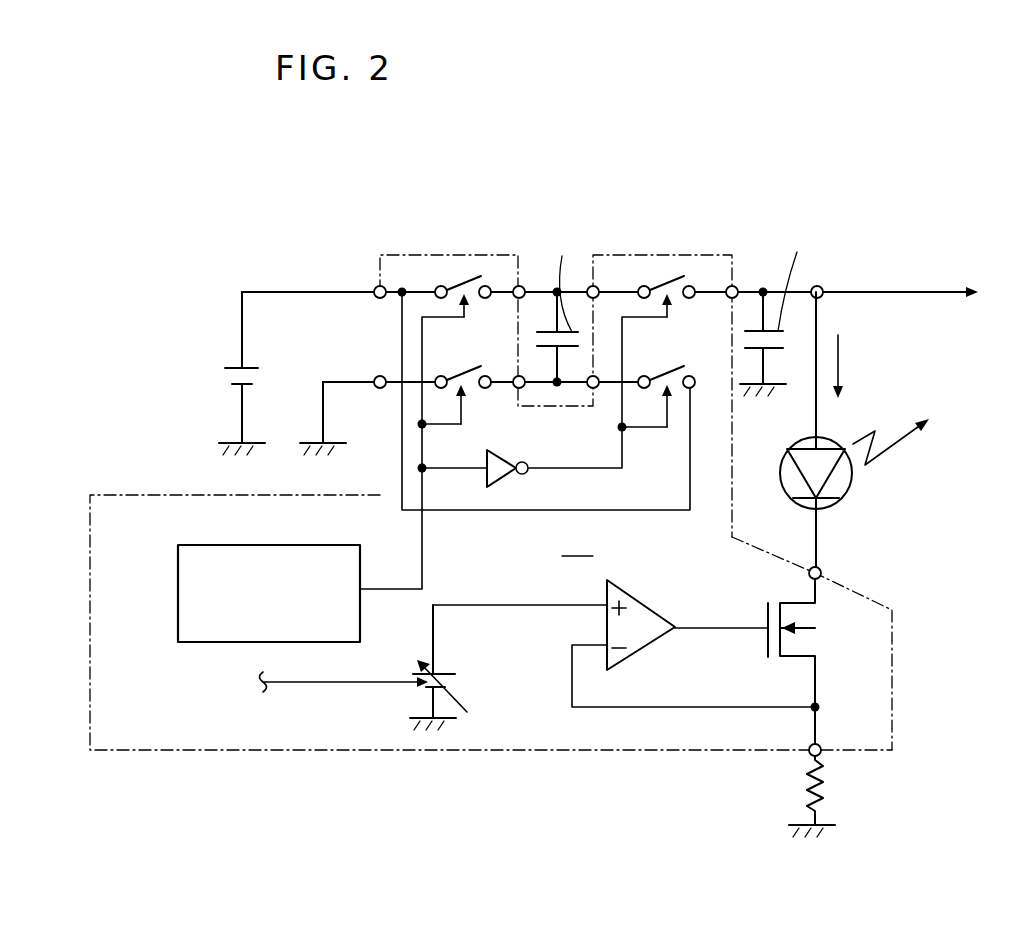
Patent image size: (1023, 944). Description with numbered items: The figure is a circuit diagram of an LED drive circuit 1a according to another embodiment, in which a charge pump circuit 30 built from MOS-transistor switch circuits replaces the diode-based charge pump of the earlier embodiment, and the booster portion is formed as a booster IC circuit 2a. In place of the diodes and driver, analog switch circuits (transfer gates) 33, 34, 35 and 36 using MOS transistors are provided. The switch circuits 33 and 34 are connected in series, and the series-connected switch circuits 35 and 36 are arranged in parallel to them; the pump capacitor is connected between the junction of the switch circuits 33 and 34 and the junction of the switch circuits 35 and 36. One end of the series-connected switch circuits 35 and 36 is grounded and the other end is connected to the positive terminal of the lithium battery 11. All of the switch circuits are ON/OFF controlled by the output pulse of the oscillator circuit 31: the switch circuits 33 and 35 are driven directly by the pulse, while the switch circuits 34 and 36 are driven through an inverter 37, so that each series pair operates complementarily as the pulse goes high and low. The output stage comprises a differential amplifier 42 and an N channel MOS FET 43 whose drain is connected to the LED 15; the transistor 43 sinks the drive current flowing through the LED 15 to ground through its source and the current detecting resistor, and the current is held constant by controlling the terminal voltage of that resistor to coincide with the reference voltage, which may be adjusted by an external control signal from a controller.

The LED drive circuit 1a is at (583, 180).
The lithium battery 11 is at (229, 362).
The LED 15 is at (849, 496).
The booster IC circuit 2a is at (898, 612).
The charge pump circuit 30 is at (585, 442).
The oscillator circuit 31 is at (298, 545).
The switch circuit 33 is at (471, 278).
The switch circuit 34 is at (681, 278).
The switch circuit 35 is at (466, 372).
The switch circuit 36 is at (670, 372).
The inverter 37 is at (497, 487).
The differential amplifier 42 is at (641, 585).
The N channel MOS FET 43 is at (812, 604).